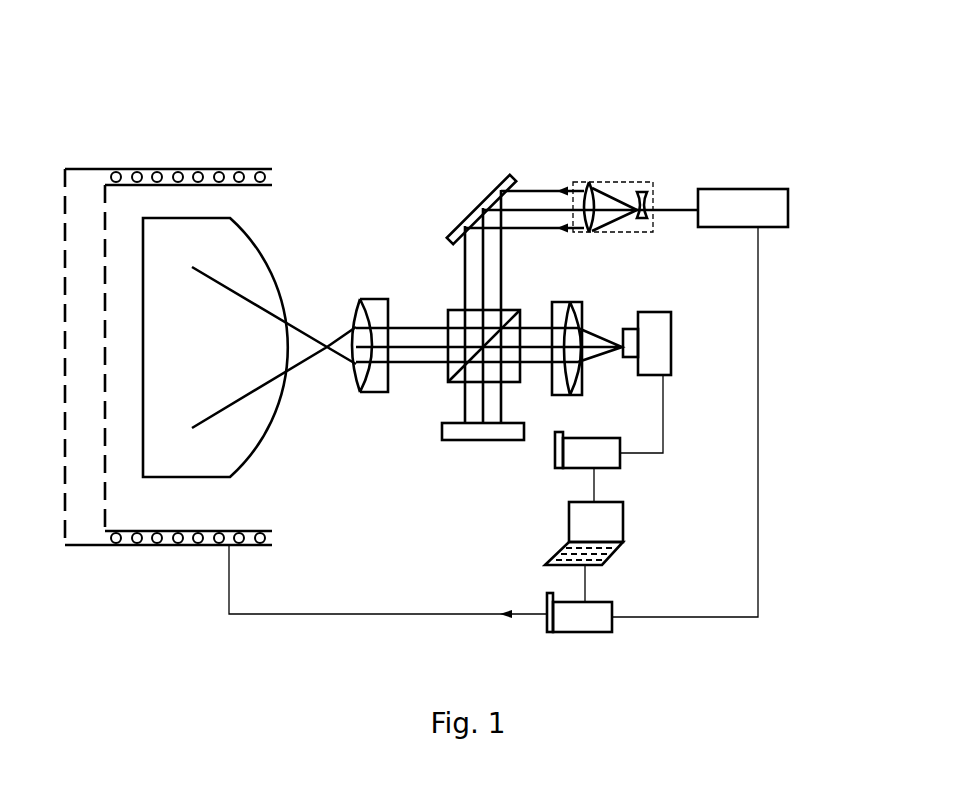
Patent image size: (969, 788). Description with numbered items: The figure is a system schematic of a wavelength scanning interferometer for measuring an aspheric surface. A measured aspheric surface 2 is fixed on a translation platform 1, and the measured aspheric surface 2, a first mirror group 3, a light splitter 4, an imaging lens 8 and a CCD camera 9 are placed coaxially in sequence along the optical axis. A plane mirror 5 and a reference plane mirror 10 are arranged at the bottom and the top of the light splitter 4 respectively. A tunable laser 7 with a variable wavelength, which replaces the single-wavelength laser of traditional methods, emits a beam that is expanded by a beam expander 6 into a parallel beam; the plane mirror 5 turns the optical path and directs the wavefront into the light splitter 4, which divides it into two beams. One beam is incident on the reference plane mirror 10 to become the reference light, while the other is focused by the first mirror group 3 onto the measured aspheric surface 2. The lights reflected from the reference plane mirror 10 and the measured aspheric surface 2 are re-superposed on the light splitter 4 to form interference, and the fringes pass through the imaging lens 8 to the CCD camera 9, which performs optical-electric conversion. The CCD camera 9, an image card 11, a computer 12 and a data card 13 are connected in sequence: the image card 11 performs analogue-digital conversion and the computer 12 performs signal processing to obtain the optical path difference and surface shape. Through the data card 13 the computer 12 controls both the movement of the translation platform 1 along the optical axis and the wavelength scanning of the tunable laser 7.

The translation platform 1 is at (188, 175).
The measured aspheric surface 2 is at (200, 232).
The first mirror group 3 is at (372, 303).
The light splitter 4 is at (458, 318).
The plane mirror 5 is at (488, 192).
The beam expander 6 is at (573, 187).
The tunable laser 7 is at (713, 189).
The imaging lens 8 is at (585, 319).
The CCD camera 9 is at (671, 350).
The reference plane mirror 10 is at (524, 430).
The image card 11 is at (621, 456).
The computer 12 is at (623, 540).
The data card 13 is at (612, 617).